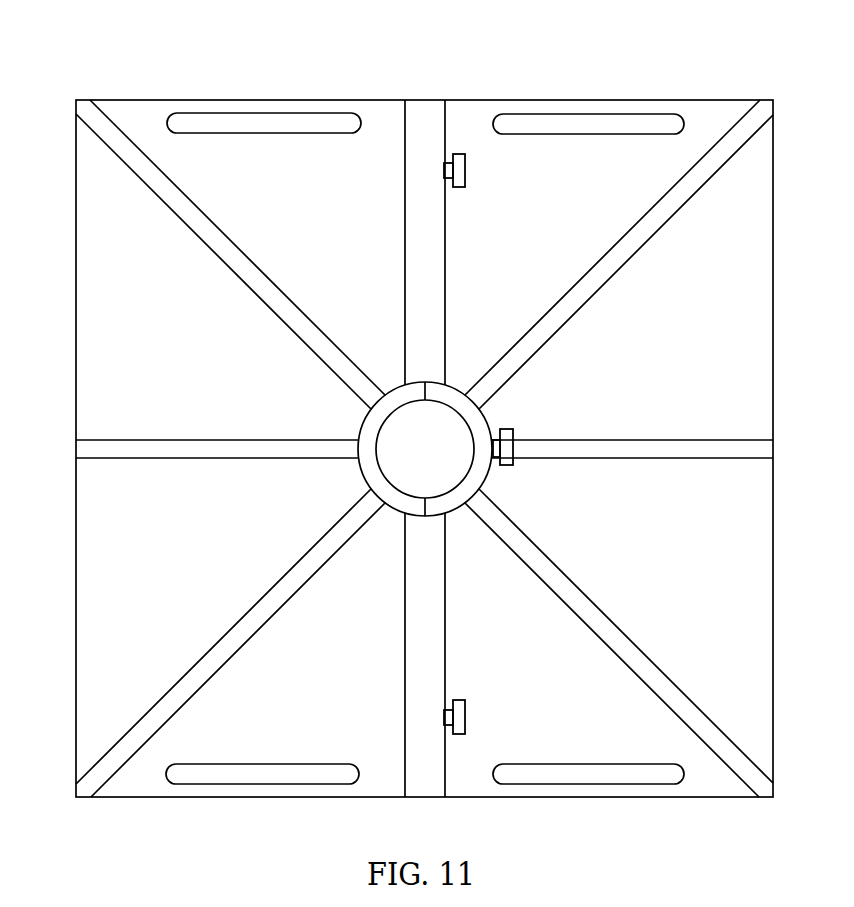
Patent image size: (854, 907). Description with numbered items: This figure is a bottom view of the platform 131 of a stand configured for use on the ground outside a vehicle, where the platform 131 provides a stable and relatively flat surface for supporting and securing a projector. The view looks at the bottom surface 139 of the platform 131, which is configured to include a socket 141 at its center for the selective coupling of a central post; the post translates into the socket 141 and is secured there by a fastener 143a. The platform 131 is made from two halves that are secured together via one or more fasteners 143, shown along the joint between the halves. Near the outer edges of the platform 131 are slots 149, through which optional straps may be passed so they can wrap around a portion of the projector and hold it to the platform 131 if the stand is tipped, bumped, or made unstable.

The platform 131 is at (141, 52).
The bottom surface 139 is at (135, 606).
The socket 141 is at (442, 461).
The fasteners 143 is at (465, 177).
The fastener 143a is at (506, 429).
The slots 149 is at (632, 134).